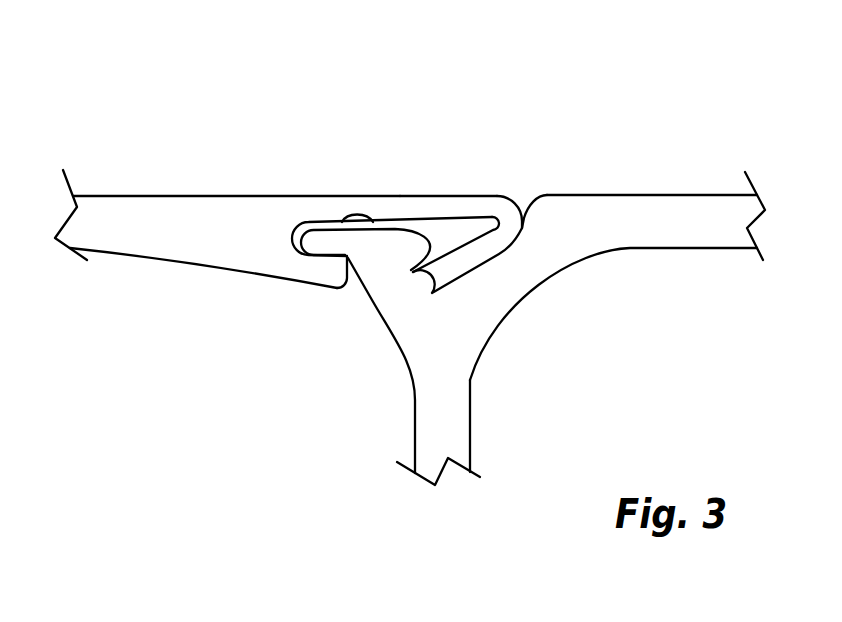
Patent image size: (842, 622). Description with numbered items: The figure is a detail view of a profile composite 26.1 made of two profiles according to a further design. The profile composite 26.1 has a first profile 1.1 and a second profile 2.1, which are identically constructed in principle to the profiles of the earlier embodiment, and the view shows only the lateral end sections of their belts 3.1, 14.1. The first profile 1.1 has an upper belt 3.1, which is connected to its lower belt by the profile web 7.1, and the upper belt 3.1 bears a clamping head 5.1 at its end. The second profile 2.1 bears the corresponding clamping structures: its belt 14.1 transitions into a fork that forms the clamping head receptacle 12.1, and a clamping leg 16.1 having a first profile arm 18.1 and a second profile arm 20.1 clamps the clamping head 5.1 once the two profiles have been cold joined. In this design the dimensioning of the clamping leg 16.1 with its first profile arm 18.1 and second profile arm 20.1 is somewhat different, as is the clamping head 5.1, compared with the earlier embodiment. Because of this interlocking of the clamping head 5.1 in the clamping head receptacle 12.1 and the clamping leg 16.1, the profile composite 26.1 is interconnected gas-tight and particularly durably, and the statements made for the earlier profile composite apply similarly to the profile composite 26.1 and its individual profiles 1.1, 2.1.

The first profile 1.1 is at (630, 183).
The second profile 2.1 is at (175, 183).
The upper belt 3.1 is at (713, 230).
The clamping head 5.1 is at (385, 255).
The profile web 7.1 is at (463, 452).
The clamping head receptacle 12.1 is at (298, 248).
The belt 14.1 is at (147, 238).
The clamping leg 16.1 is at (508, 176).
The first profile arm 18.1 is at (440, 195).
The second profile arm 20.1 is at (460, 268).
The profile composite 26.1 is at (395, 170).